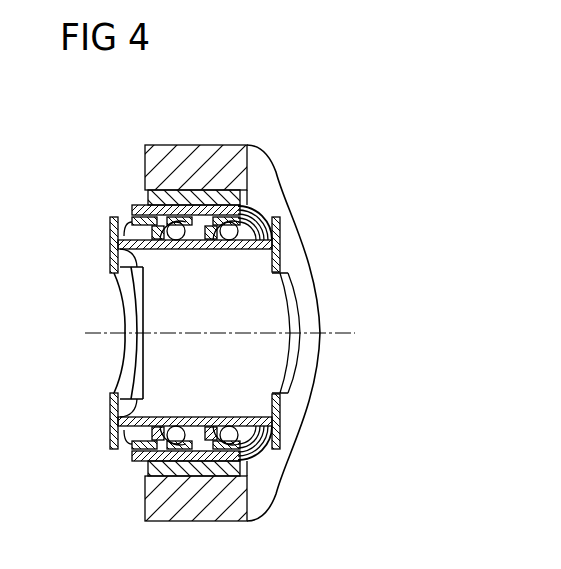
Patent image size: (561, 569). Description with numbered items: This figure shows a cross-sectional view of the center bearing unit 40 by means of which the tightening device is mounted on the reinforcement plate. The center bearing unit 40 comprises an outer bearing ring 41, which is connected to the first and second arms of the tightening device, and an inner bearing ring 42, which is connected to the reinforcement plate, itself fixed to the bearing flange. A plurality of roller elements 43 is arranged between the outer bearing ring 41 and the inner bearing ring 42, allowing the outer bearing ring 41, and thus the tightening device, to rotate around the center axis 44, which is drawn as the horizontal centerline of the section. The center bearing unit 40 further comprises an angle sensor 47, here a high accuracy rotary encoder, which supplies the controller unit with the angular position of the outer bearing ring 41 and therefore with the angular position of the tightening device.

The center bearing unit 40 is at (280, 127).
The outer bearing ring 41 is at (132, 210).
The inner bearing ring 42 is at (110, 247).
The roller elements 43 is at (212, 252).
The center axis 44 is at (345, 333).
The angle sensor 47 is at (278, 212).